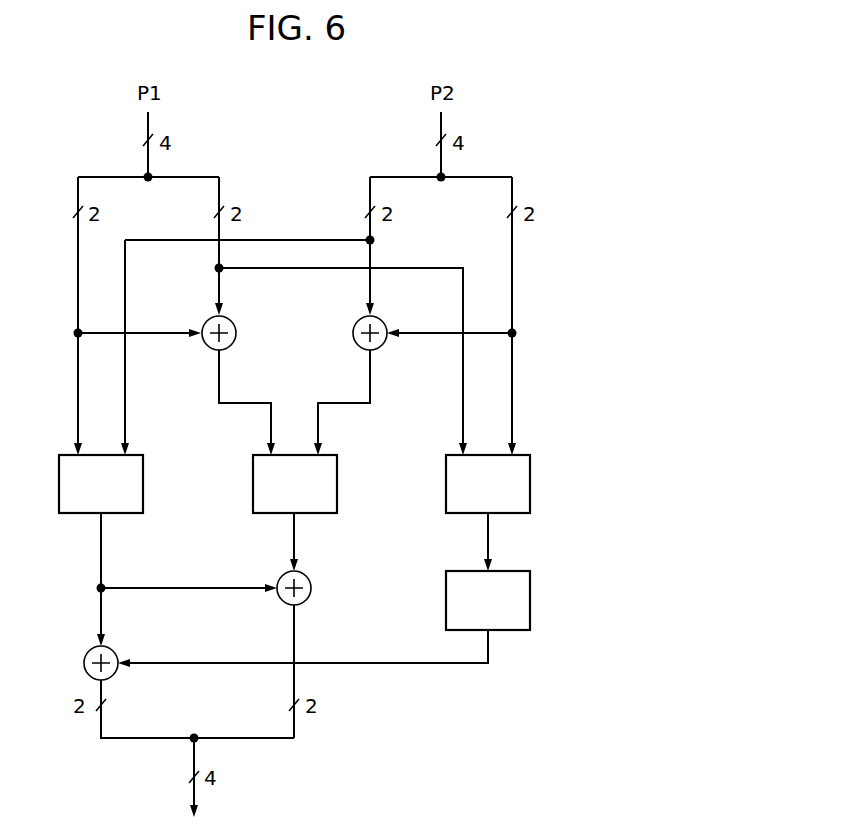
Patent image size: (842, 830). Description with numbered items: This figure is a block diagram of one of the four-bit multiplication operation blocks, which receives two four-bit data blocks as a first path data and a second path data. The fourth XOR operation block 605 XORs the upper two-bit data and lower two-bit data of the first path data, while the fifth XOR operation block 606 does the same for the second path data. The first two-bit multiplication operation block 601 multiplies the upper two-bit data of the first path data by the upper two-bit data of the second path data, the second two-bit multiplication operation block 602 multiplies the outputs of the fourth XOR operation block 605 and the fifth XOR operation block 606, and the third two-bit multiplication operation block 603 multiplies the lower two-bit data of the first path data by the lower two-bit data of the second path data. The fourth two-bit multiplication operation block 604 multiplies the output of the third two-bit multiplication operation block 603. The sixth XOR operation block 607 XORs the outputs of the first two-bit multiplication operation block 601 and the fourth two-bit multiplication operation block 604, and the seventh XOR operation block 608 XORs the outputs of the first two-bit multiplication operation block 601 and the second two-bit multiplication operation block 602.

The first 2-bit multiplication operation block 601 is at (145, 485).
The second 2-bit multiplication operation block 602 is at (338, 485).
The third 2-bit multiplication operation block 603 is at (531, 485).
The fourth 2-bit multiplication operation block 604 is at (531, 600).
The fourth XOR operation block 605 is at (231, 345).
The fifth XOR operation block 606 is at (382, 345).
The sixth XOR operation block 607 is at (114, 676).
The seventh XOR operation block 608 is at (309, 591).